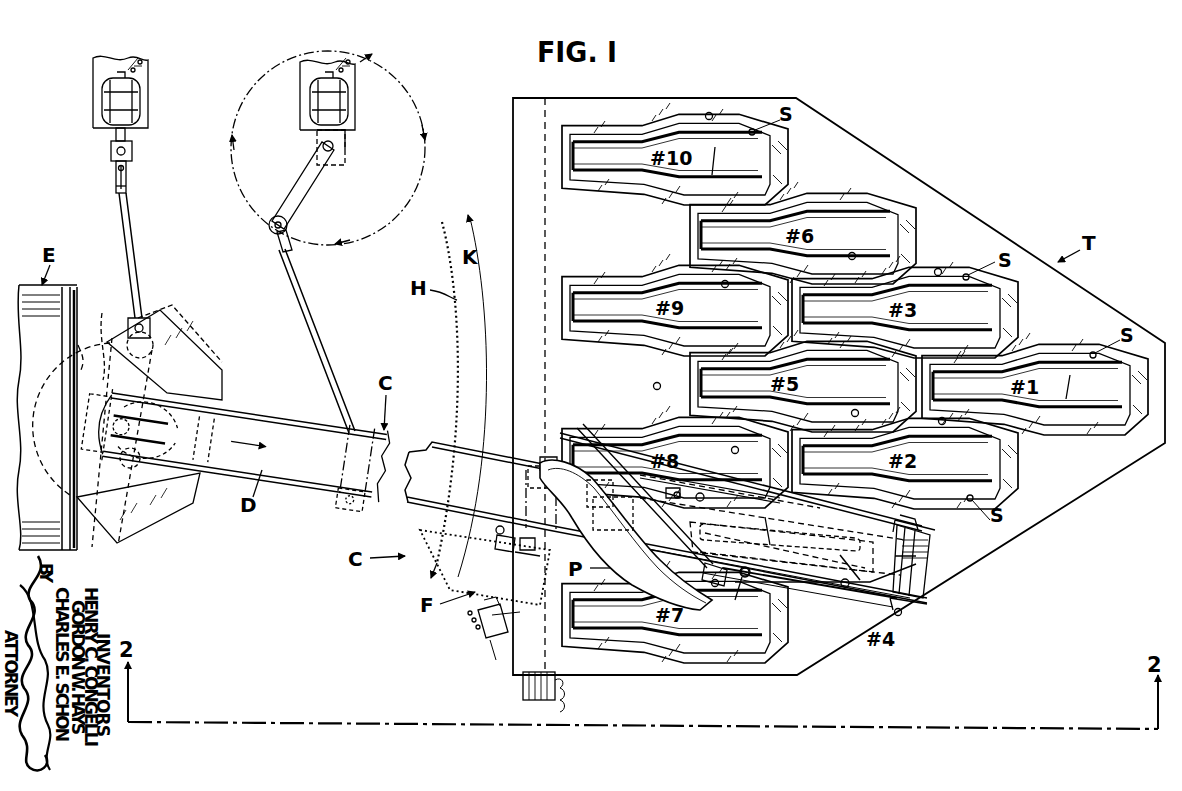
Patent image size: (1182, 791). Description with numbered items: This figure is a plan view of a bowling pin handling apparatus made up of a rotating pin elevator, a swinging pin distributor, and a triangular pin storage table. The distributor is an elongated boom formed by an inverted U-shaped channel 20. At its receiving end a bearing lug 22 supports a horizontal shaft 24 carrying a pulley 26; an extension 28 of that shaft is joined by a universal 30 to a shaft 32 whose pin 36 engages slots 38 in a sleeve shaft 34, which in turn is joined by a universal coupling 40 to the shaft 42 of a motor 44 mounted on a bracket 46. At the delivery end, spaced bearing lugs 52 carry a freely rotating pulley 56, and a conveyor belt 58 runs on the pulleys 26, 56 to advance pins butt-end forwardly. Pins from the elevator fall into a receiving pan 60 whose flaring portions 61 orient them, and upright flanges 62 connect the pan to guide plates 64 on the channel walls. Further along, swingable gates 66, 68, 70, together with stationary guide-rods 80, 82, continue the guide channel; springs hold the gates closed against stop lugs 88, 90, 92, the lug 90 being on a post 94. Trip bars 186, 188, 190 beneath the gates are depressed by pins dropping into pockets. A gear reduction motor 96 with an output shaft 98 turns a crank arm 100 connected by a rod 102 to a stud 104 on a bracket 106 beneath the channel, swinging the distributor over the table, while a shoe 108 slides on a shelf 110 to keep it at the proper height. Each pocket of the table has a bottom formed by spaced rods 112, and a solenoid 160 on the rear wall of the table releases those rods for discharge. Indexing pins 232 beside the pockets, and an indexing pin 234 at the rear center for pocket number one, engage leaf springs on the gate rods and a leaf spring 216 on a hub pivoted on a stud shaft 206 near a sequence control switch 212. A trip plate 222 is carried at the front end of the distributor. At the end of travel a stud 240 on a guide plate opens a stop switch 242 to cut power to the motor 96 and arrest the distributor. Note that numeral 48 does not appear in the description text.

The U-shaped channel 20 is at (537, 486).
The bearing lug 22 is at (127, 343).
The horizontal shaft 24 is at (117, 452).
The pulley 26 is at (107, 425).
The extension 28 is at (178, 322).
The universal 30 is at (155, 318).
The shaft 32 is at (136, 243).
The sleeve shaft 34 is at (126, 190).
The pin 36 is at (118, 180).
The slots 38 is at (126, 167).
The universal coupling 40 is at (132, 149).
The shaft of motor 42 is at (116, 134).
The motor 44 is at (140, 92).
The bracket 46 is at (93, 75).
The pivot shaft 48 is at (166, 433).
The bearing lugs 52 is at (924, 530).
The pulley 56 is at (825, 548).
The conveyor belt 58 is at (283, 480).
The bowling pin receiving pan 60 is at (82, 360).
The upward and outwardly flaring portions 61 is at (205, 352).
The upright flanges 62 is at (249, 416).
The guide plates 64 is at (237, 474).
The gate 66 is at (588, 438).
The gate 68 is at (795, 590).
The gate 70 is at (810, 560).
The guide-rod 80 is at (552, 457).
The guide-rod 82 is at (915, 522).
The stop lug 88 is at (515, 548).
The stop lug 90 is at (742, 580).
The stop lug 92 is at (750, 490).
The post 94 is at (702, 574).
The gear reduction motor 96 is at (310, 112).
The output shaft 98 is at (334, 147).
The crank arm 100 is at (312, 190).
The rod 102 is at (313, 298).
The stud 104 is at (405, 474).
The bracket 106 is at (354, 468).
The shoe 108 is at (528, 500).
The shelf 110 is at (513, 150).
The rods 112 is at (904, 273).
The solenoid 160 is at (523, 690).
The trip bar 186 is at (540, 557).
The trip bar 188 is at (822, 605).
The trip bar 190 is at (766, 516).
The vertical stud shaft 206 is at (697, 500).
The sequence control switch 212 is at (626, 535).
The leaf spring 216 is at (630, 520).
The trip plate 222 is at (932, 570).
The indexing pin 232 is at (709, 112).
The indexing pin 234 is at (653, 385).
The stud 240 is at (480, 555).
The stop switch 242 is at (486, 632).